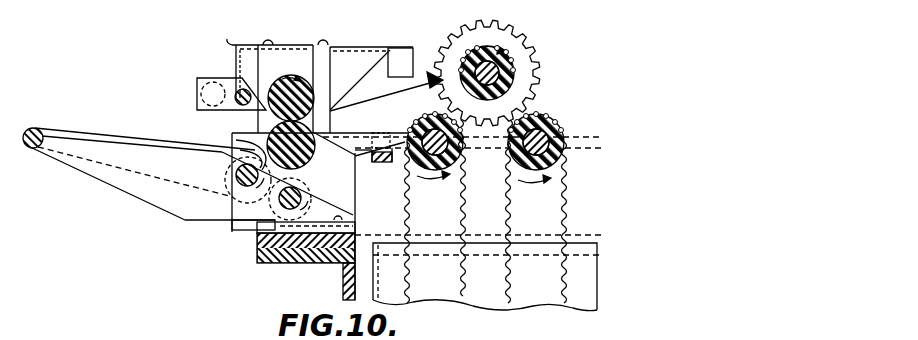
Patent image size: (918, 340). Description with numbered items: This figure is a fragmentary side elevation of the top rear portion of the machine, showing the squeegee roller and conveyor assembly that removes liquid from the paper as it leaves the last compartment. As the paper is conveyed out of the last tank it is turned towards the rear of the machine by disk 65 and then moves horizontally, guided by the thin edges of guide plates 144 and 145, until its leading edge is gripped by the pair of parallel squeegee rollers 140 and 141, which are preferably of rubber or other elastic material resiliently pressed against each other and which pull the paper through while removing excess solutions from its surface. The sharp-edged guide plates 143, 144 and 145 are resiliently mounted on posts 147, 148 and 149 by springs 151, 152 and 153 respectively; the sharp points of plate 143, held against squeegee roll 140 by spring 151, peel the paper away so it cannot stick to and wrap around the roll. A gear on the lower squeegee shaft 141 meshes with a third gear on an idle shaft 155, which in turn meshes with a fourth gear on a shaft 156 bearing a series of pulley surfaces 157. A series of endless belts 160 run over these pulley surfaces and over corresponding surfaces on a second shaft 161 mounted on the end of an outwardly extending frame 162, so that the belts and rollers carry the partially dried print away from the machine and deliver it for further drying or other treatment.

The disk 65 is at (532, 69).
The upper squeegee roller 140 is at (293, 76).
The lower squeegee roller 141 is at (304, 166).
The guide plate 143 is at (200, 78).
The guide plate 144 is at (418, 54).
The guide plate 145 is at (363, 156).
The post 147 is at (277, 58).
The post 148 is at (330, 84).
The post 149 is at (398, 166).
The spring 151 is at (233, 39).
The spring 152 is at (367, 46).
The spring 153 is at (388, 131).
The idle shaft 155 is at (281, 198).
The shaft 156 is at (232, 177).
The pulley surfaces 157 is at (234, 140).
The endless belts 160 is at (162, 143).
The second shaft 161 is at (40, 131).
The frame 162 is at (128, 195).